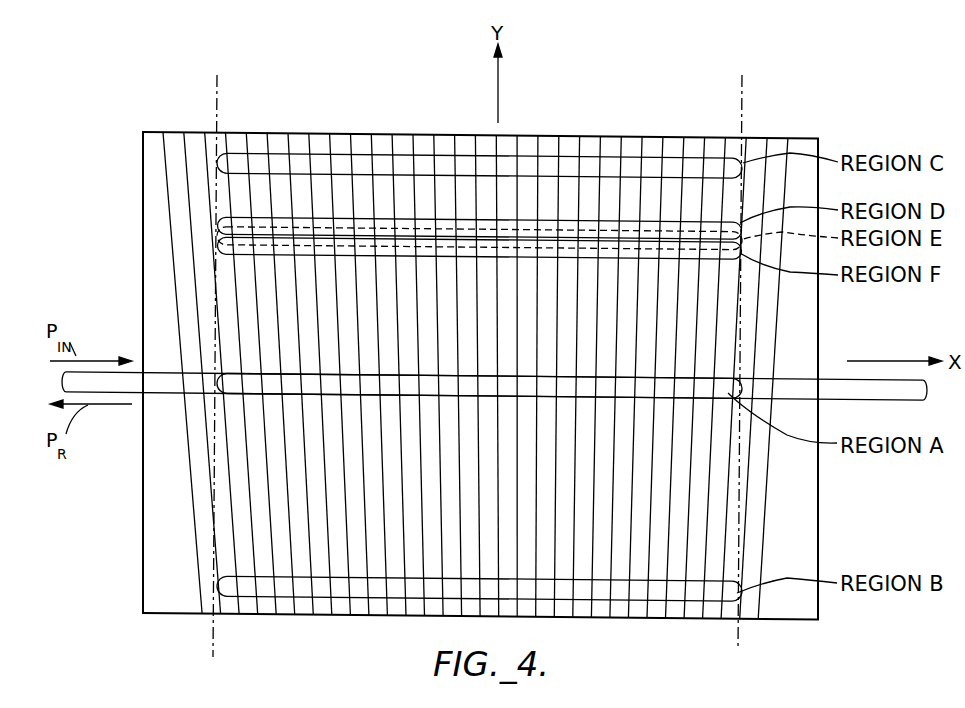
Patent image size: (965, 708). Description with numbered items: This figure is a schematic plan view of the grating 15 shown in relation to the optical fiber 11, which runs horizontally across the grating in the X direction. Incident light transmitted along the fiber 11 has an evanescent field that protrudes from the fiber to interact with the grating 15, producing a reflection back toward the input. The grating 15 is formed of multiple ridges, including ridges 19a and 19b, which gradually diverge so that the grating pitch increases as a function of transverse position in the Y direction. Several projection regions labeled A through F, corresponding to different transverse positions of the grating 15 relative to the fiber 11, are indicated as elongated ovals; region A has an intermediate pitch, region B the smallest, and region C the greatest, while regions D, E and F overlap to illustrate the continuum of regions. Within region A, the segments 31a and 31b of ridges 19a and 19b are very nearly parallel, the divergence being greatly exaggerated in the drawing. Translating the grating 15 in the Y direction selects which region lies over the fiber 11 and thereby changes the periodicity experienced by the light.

The grating 15 is at (158, 120).
The optical fiber 11 is at (887, 402).
The ridge 19a is at (313, 300).
The ridge 19b is at (657, 330).
The segment 31a is at (317, 381).
The segment 31b is at (657, 388).